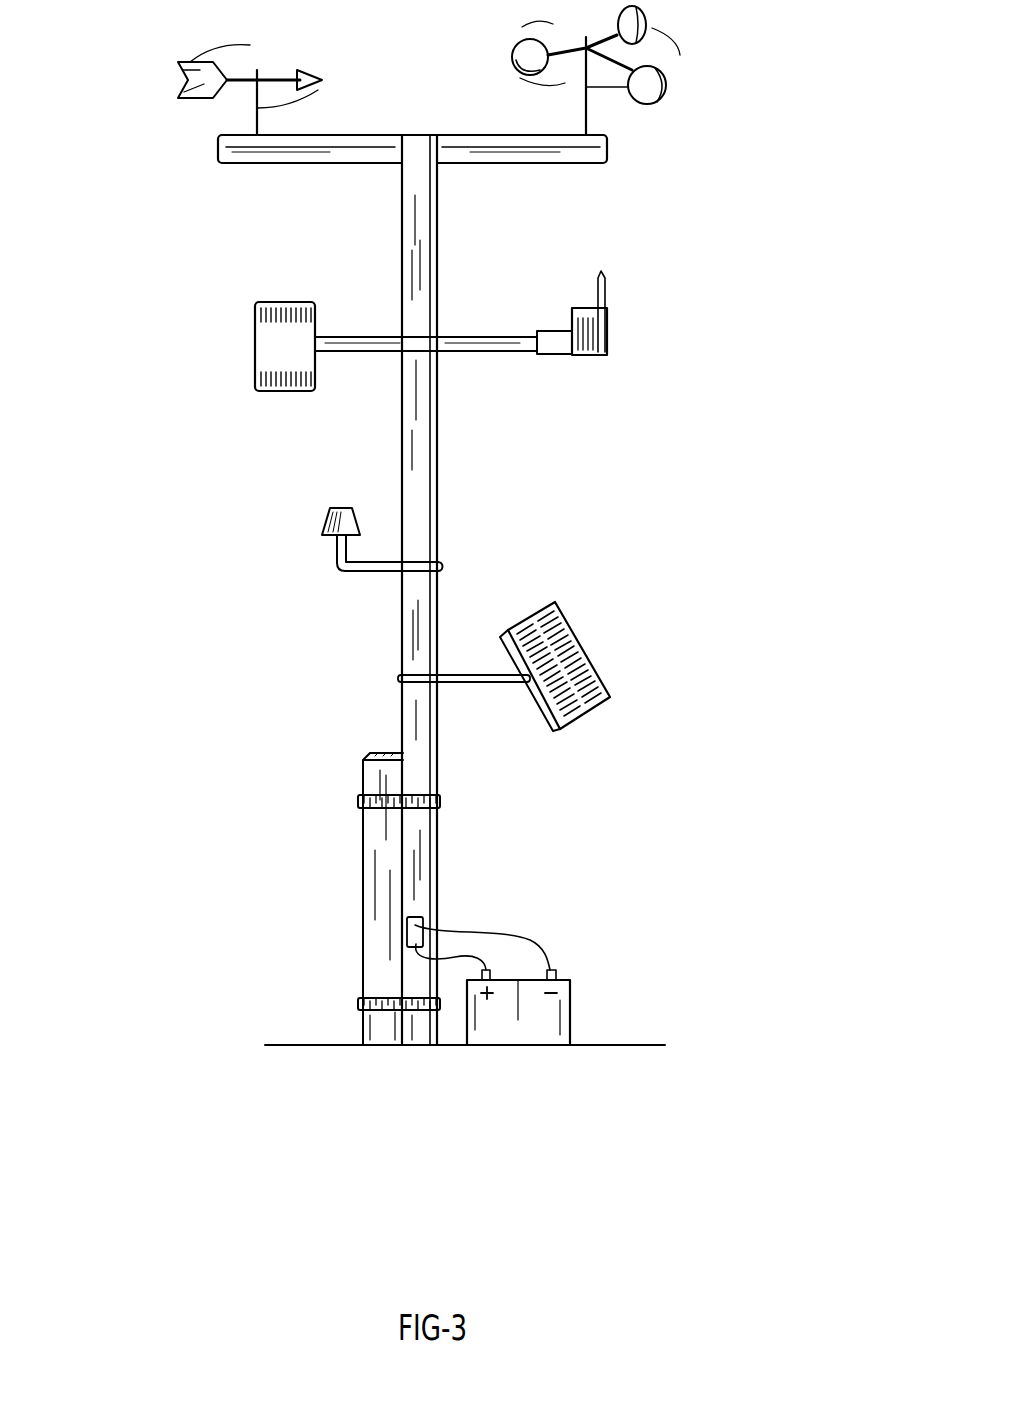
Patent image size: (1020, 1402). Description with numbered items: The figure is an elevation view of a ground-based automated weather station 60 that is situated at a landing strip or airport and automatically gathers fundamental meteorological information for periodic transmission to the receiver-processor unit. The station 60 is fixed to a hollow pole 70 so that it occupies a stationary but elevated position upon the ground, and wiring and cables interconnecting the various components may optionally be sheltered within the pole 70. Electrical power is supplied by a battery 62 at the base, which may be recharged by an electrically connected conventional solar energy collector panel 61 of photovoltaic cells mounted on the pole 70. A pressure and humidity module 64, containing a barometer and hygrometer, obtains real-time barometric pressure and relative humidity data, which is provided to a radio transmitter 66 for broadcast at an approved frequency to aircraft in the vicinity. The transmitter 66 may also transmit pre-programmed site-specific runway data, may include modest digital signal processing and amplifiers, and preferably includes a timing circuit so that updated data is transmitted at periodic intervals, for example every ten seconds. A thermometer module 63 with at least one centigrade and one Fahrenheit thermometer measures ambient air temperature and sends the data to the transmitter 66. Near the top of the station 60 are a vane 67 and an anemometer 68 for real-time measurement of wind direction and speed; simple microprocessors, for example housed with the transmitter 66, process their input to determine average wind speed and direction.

The ground-based automated weather station 60 is at (678, 482).
The solar energy collector panel 61 is at (578, 644).
The battery 62 is at (548, 1007).
The thermometer module 63 is at (335, 522).
The pressure and humidity module 64 is at (272, 352).
The radio transmitter 66 is at (597, 333).
The vane 67 is at (176, 104).
The anemometer 68 is at (662, 97).
The pole 70 is at (420, 480).